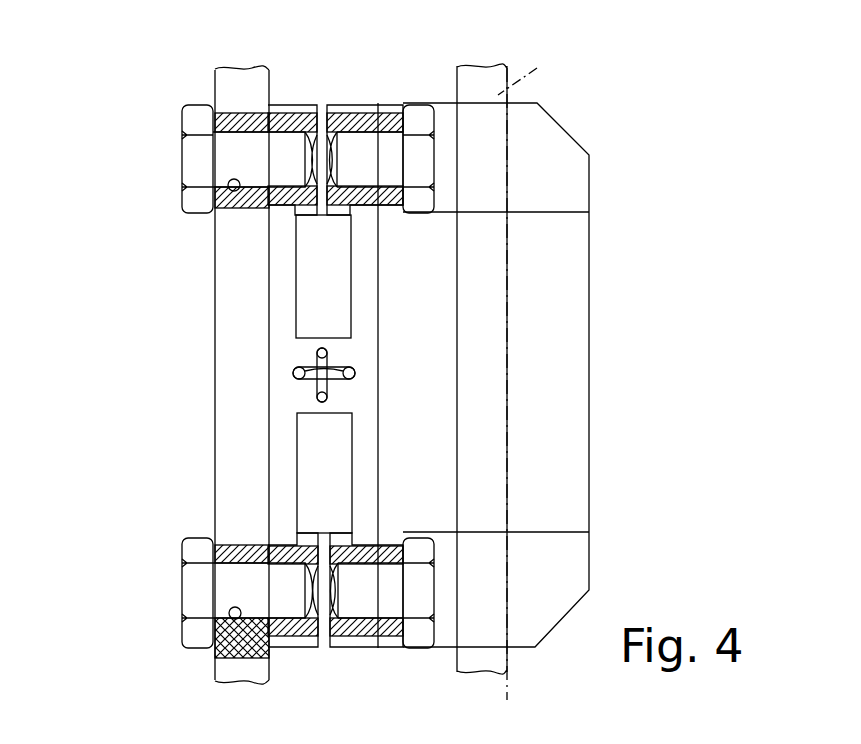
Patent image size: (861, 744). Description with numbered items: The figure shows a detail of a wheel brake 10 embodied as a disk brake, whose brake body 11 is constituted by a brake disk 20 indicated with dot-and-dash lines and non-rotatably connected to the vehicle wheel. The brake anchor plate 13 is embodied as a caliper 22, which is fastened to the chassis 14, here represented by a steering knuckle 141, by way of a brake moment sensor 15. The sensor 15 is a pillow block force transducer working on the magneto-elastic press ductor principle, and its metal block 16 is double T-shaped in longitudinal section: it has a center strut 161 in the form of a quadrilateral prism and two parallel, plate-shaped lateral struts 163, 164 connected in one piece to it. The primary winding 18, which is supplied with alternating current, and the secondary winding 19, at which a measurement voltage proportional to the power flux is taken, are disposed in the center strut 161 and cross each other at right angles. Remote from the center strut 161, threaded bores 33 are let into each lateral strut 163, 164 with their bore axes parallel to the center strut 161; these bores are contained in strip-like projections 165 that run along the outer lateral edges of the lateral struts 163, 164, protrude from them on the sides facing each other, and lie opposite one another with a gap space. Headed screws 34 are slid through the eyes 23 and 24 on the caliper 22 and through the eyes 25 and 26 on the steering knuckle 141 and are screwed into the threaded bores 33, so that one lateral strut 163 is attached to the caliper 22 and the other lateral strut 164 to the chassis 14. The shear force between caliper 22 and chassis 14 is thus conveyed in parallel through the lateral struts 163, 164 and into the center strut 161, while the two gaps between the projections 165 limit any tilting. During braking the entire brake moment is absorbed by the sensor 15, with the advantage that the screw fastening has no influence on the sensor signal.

The wheel brake 10 is at (548, 110).
The brake body 11 is at (486, 65).
The brake anchor plate 13 is at (592, 417).
The chassis 14 is at (213, 332).
The brake moment sensor 15 is at (297, 100).
The metal block 16 is at (356, 400).
The primary winding 18 is at (310, 392).
The secondary winding 19 is at (346, 365).
The brake disk 20 is at (537, 68).
The caliper 22 is at (560, 483).
The eye 23 is at (415, 117).
The eye 24 is at (390, 616).
The eye 25 is at (234, 206).
The eye 26 is at (218, 652).
The threaded bore 33 is at (287, 115).
The headed screw 34 is at (197, 125).
The steering knuckle 141 is at (235, 412).
The center strut 161 is at (283, 373).
The lateral strut 163 is at (365, 265).
The lateral strut 164 is at (280, 275).
The strip-like projection 165 is at (340, 103).